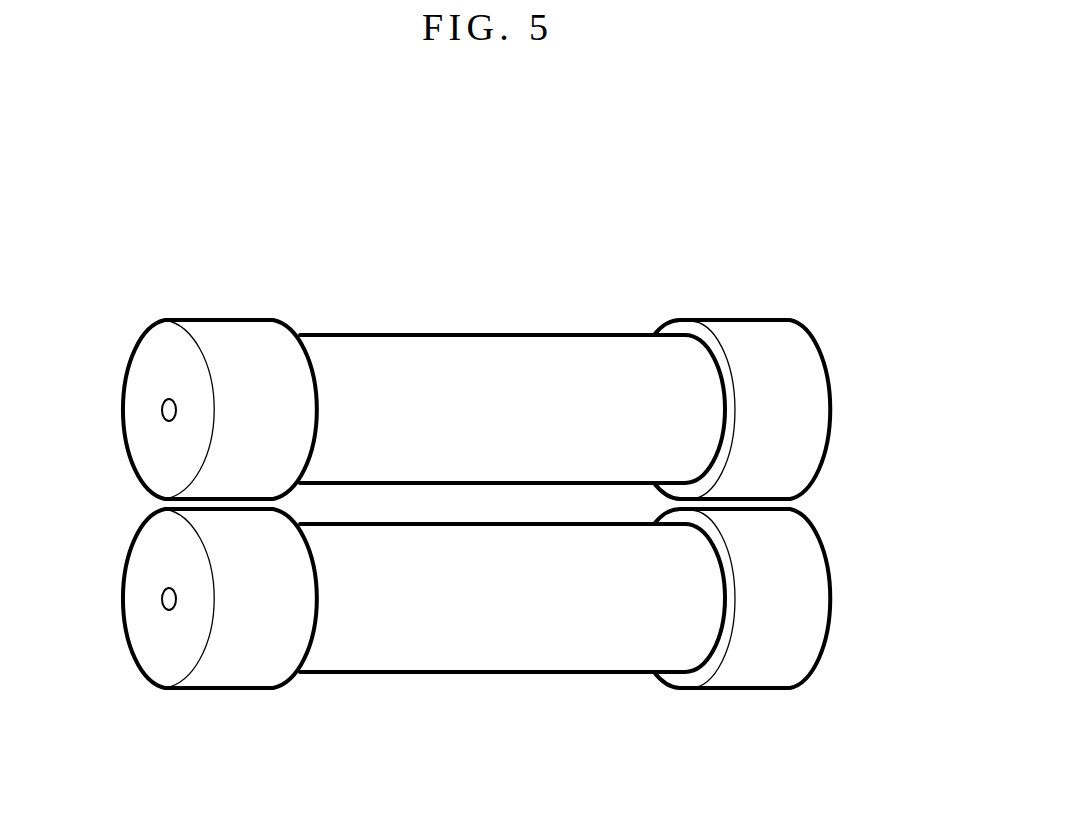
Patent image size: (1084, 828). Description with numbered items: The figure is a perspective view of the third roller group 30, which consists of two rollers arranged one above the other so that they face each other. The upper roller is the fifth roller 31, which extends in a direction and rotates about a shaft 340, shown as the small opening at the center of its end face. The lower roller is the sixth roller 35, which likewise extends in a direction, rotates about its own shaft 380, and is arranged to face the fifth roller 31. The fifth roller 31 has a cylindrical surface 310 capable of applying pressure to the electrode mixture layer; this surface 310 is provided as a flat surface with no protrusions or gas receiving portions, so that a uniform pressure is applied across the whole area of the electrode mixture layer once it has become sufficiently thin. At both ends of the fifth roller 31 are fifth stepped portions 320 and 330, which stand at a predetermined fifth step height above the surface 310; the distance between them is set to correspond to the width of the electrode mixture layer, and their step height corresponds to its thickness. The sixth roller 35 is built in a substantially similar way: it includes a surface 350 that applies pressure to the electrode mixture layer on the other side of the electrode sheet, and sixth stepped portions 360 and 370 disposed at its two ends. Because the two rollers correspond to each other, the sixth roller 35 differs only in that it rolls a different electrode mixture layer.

The third roller group 30 is at (827, 233).
The fifth roller 31 is at (870, 397).
The sixth roller 35 is at (870, 586).
The surface 310 is at (439, 322).
The fifth stepped portion 320 is at (743, 328).
The fifth stepped portion 330 is at (229, 328).
The shaft 340 is at (162, 410).
The surface 350 is at (492, 690).
The sixth stepped portion 360 is at (750, 682).
The sixth stepped portion 370 is at (235, 683).
The shaft 380 is at (162, 599).